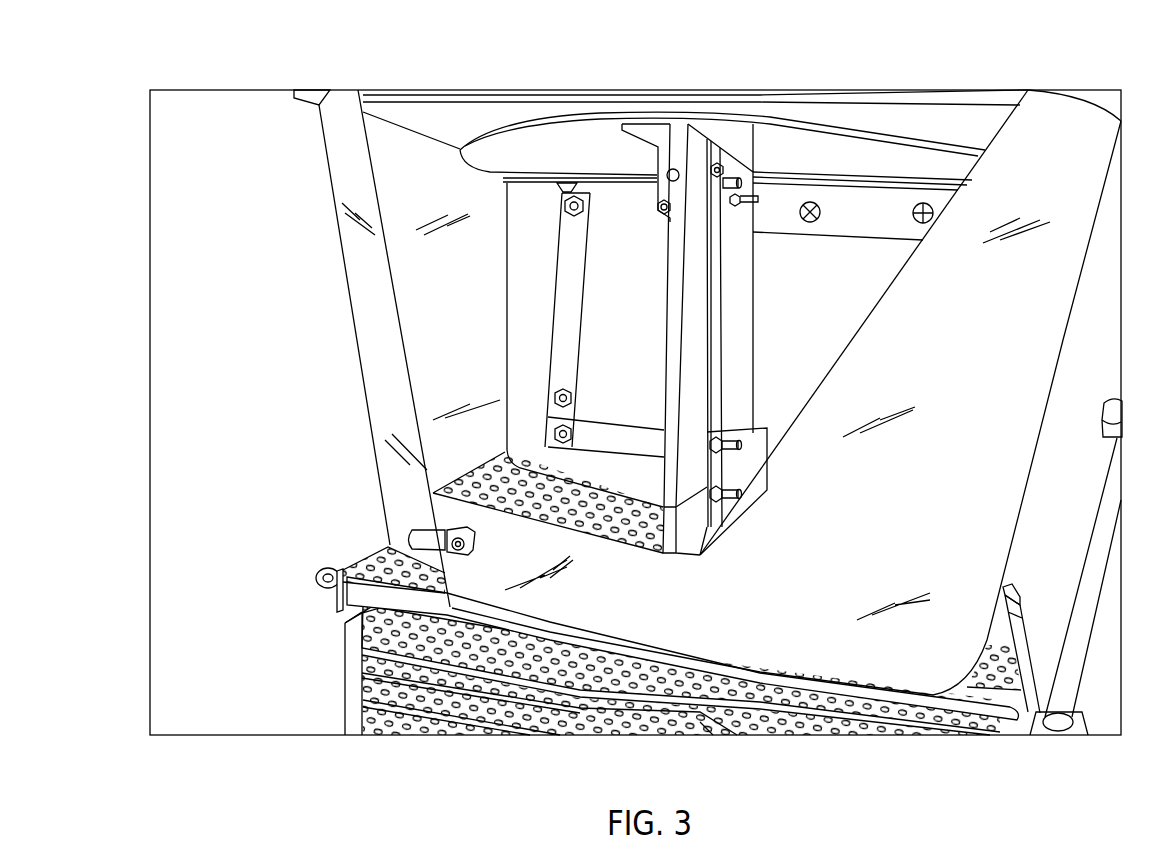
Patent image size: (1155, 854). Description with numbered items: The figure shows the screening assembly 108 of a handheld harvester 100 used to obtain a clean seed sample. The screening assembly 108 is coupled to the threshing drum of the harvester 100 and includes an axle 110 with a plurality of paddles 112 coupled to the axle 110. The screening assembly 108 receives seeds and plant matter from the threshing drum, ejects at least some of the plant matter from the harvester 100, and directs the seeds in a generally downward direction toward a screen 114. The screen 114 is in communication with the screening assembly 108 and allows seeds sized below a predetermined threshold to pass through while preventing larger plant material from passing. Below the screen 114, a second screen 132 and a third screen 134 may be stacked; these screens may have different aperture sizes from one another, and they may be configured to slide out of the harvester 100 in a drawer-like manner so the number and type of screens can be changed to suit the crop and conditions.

The harvester 100 is at (130, 70).
The screening assembly 108 is at (707, 392).
The axle 110 is at (771, 178).
The paddles 112 is at (527, 300).
The screen 114 is at (380, 562).
The second screen 132 is at (375, 643).
The third screen 134 is at (375, 673).